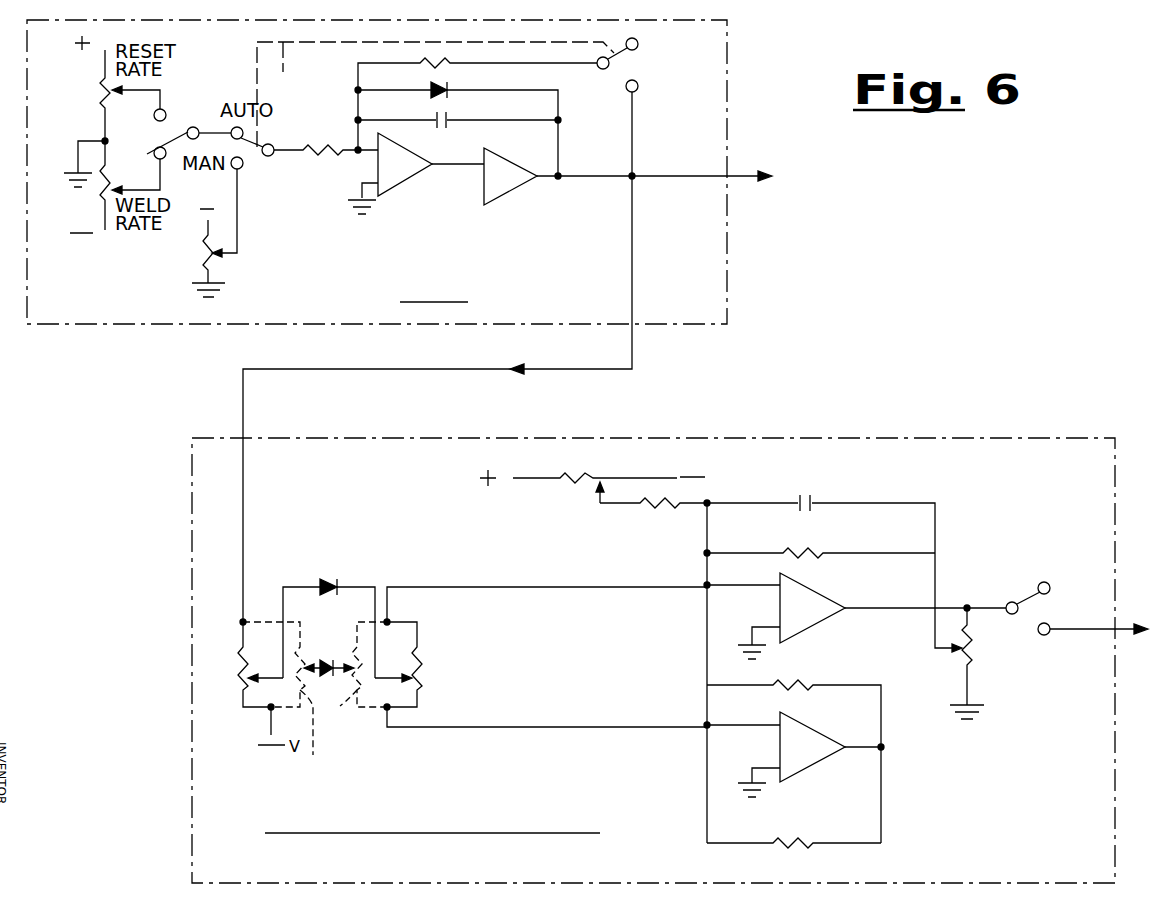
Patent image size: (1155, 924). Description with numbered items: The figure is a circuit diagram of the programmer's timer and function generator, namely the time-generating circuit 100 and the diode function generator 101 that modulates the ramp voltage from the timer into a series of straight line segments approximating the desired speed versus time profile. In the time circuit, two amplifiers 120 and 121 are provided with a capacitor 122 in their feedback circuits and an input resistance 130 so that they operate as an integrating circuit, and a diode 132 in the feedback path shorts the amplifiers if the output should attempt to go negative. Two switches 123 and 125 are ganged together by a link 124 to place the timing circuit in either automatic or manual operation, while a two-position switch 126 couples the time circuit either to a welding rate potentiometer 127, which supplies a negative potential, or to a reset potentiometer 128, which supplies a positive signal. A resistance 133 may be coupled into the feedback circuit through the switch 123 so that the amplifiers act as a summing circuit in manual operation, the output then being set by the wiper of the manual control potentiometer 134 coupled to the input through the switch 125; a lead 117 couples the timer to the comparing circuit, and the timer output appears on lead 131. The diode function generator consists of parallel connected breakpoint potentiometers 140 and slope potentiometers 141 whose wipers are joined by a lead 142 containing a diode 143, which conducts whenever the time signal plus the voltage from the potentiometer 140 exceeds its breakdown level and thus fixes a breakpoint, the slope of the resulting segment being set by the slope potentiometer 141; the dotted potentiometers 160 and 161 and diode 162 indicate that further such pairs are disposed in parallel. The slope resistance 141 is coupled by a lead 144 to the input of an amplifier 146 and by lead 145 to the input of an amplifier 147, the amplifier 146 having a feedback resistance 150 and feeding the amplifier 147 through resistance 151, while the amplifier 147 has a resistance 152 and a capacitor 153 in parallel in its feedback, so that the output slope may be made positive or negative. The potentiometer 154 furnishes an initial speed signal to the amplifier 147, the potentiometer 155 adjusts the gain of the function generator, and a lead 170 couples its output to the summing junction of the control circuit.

The time-generating circuit 100 is at (728, 226).
The diode function generator 101 is at (725, 438).
The lead 117 is at (742, 173).
The amplifier 120 is at (400, 182).
The amplifier 121 is at (515, 190).
The capacitor 122 is at (455, 125).
The switch 123 is at (608, 70).
The link 124 is at (283, 72).
The switch 125 is at (246, 152).
The two-position switch 126 is at (170, 134).
The welding rate potentiometer 127 is at (103, 182).
The reset potentiometer 128 is at (103, 80).
The input resistance 130 is at (330, 158).
The lead 131 is at (632, 238).
The diode 132 is at (430, 89).
The resistance 133 is at (437, 62).
The manual control potentiometer 134 is at (205, 248).
The breakpoint potentiometer 140 is at (240, 665).
The slope potentiometer 141 is at (427, 655).
The lead 142 is at (296, 585).
The diode 143 is at (338, 583).
The lead 144 is at (515, 700).
The lead 145 is at (515, 590).
The amplifier 146 is at (800, 722).
The amplifier 147 is at (810, 590).
The feedback resistance 150 is at (795, 842).
The resistance 151 is at (795, 683).
The resistance 152 is at (800, 550).
The capacitor 153 is at (805, 497).
The potentiometer 154 is at (573, 486).
The potentiometer 155 is at (972, 665).
The dotted potentiometer 160 is at (313, 755).
The dotted potentiometer 161 is at (345, 722).
The diode 162 is at (323, 660).
The lead 170 is at (1104, 593).